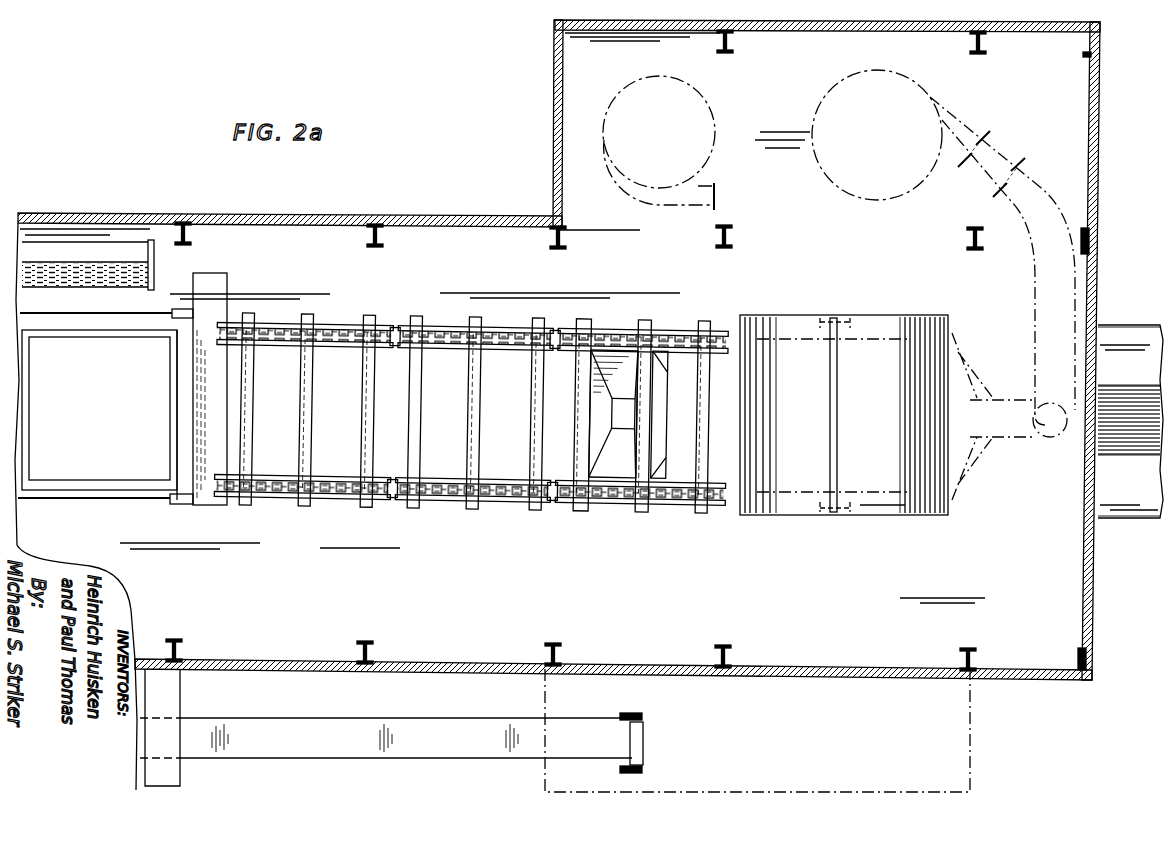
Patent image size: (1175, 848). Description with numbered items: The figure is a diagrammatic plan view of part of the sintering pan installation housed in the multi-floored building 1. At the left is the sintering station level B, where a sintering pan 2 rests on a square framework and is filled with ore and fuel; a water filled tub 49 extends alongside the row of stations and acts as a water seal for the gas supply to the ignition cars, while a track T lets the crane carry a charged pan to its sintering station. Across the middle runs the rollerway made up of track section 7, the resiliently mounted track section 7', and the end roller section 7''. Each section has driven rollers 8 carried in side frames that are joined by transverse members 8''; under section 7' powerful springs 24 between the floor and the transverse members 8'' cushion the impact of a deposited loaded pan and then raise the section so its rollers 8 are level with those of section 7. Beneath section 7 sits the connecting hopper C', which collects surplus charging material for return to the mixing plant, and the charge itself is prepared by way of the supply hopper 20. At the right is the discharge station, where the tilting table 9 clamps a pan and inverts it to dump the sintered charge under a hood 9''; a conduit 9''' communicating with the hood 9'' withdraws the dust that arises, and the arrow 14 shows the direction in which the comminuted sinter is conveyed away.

The multi-floored building 1 is at (556, 159).
The sintering pan 2 is at (27, 430).
The water filled tub 49 is at (152, 272).
The sintering station level B is at (52, 312).
The track T is at (108, 312).
The roller section 7'' is at (304, 410).
The track section 7' is at (474, 414).
The track section 7 is at (642, 417).
The springs 24 is at (546, 345).
The driven rollers 8 is at (475, 416).
The transverse members 8'' is at (472, 413).
The connecting hopper C' is at (640, 414).
The hood 9'' is at (844, 397).
The tilting table 9 is at (832, 415).
The supply hopper 20 is at (692, 106).
The conduit 9''' is at (1002, 298).
The arrow 14 is at (1118, 338).